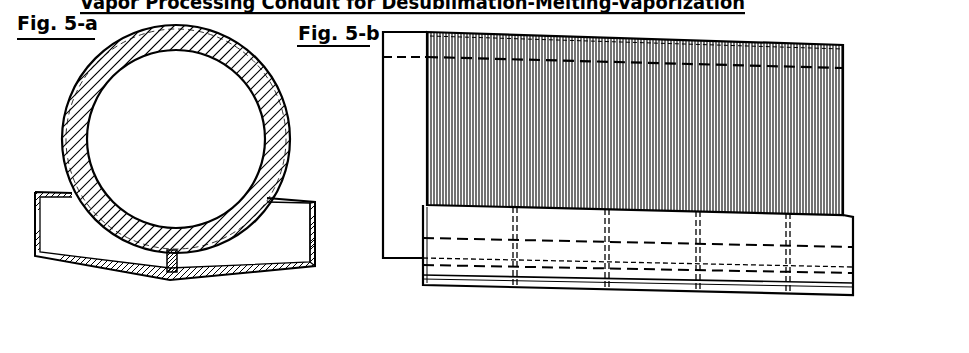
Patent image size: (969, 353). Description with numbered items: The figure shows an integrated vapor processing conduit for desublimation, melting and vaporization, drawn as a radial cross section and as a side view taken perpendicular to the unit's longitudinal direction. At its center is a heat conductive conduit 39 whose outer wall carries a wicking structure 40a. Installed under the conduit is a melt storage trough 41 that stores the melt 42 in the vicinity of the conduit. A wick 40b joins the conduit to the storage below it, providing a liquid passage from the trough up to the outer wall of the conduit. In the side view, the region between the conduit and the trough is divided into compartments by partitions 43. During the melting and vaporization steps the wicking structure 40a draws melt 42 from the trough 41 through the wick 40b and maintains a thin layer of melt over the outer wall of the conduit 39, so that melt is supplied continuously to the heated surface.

In FIG. 5-a, the conduit 39 is at (283, 132).
In FIG. 5-b, the conduit 39 is at (400, 137).
In FIG. 5-a, the wicking structure 40a is at (280, 89).
In FIG. 5-b, the wicking structure 40a is at (432, 100).
In FIG. 5-a, the wick 40b is at (167, 270).
In FIG. 5-a, the melt storage trough 41 is at (318, 240).
In FIG. 5-a, the melt 42 is at (73, 247).
In FIG. 5-b, the partitions 43 is at (607, 238).